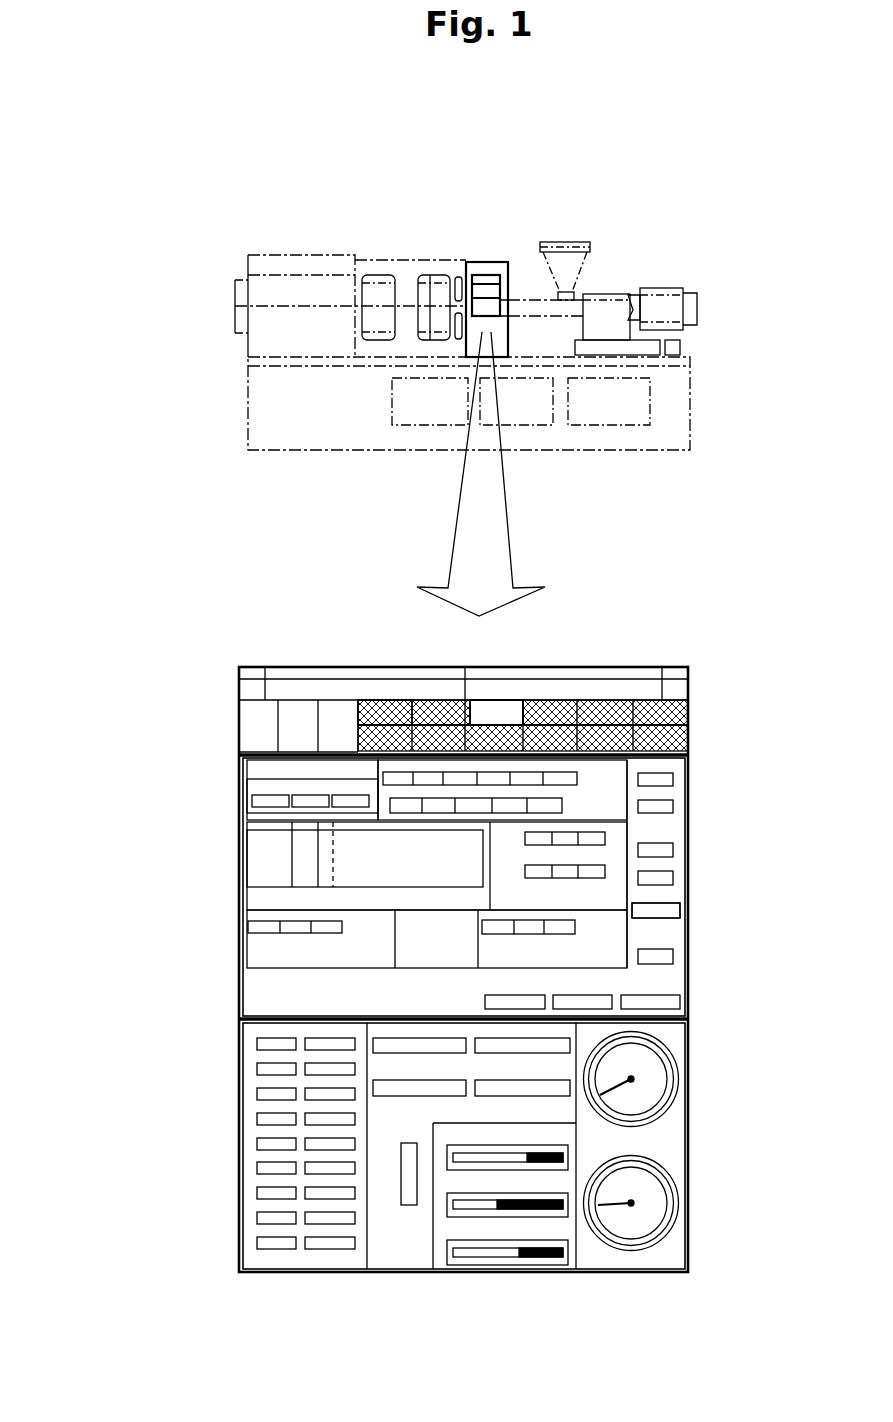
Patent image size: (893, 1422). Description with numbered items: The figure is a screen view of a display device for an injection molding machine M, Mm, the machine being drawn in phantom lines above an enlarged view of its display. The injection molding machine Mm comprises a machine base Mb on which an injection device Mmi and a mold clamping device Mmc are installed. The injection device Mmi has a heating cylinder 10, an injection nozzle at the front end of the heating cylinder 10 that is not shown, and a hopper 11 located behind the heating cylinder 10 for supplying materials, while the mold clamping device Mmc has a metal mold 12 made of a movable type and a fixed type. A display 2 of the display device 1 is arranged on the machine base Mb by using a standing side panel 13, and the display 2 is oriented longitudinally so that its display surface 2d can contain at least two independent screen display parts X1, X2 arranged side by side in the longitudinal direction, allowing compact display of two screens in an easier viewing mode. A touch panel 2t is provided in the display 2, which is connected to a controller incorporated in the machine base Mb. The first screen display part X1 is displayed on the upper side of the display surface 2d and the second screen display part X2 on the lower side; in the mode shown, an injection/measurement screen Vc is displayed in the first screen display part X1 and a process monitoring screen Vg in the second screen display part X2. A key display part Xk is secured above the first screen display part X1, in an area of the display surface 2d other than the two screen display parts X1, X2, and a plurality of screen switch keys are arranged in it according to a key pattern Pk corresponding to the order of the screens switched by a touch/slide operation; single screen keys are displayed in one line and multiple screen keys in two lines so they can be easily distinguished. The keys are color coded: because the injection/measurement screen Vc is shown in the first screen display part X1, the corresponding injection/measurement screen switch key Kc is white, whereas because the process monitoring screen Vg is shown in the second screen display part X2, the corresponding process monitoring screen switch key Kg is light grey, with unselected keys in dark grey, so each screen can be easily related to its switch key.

The injection molding machine M is at (482, 331).
The injection molding machine Mm is at (730, 163).
The machine base Mb is at (662, 452).
The mold clamping device Mmc is at (375, 236).
The injection device Mmi is at (632, 276).
The metal mold 12 is at (432, 272).
The heating cylinder 10 is at (522, 299).
The hopper 11 is at (594, 246).
The standing side panel 13 is at (508, 307).
The display device 1 is at (492, 273).
The display 2 is at (471, 262).
The touch panel 2t is at (491, 308).
The display surface 2d is at (475, 305).
The key pattern Pk is at (235, 729).
The key display part Xk is at (692, 712).
The process monitoring screen switch key Kg is at (387, 698).
The injection/measurement screen switch key Kc is at (505, 712).
The first screen display part X1 is at (694, 838).
The injection/measurement screen Vc is at (662, 980).
The second screen display part X2 is at (694, 1122).
The process monitoring screen Vg is at (665, 1250).